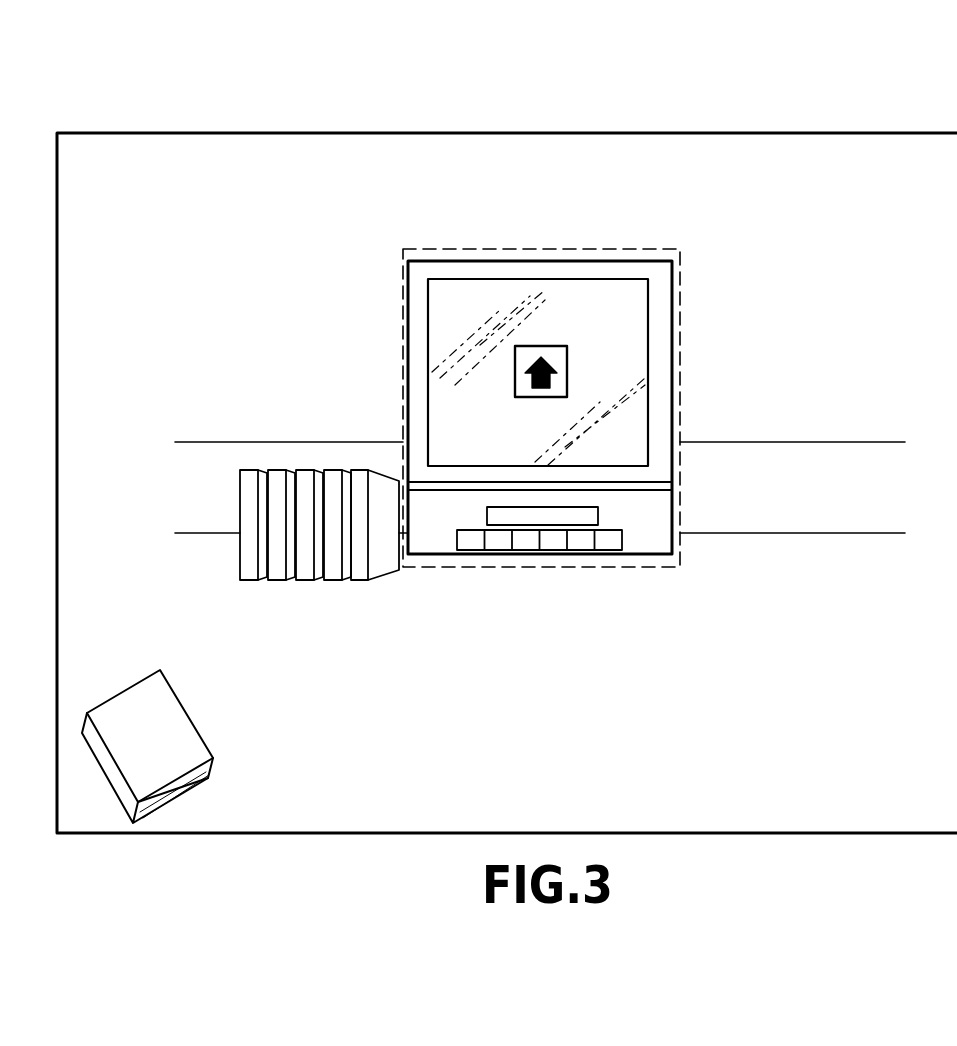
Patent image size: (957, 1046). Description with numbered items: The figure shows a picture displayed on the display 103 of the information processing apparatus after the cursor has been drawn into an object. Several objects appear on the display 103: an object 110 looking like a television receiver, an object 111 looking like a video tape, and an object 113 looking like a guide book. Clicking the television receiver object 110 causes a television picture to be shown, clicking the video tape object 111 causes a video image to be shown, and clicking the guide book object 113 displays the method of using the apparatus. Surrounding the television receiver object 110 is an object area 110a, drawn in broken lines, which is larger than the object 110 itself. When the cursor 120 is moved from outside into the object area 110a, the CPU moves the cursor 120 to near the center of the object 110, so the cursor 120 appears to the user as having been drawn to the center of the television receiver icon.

The display 103 is at (707, 133).
The object looking like a television receiver 110 is at (568, 305).
The object area 110a is at (643, 248).
The cursor 120 is at (567, 367).
The object looking like a video tape 111 is at (280, 580).
The object looking like a guide book 113 is at (193, 718).